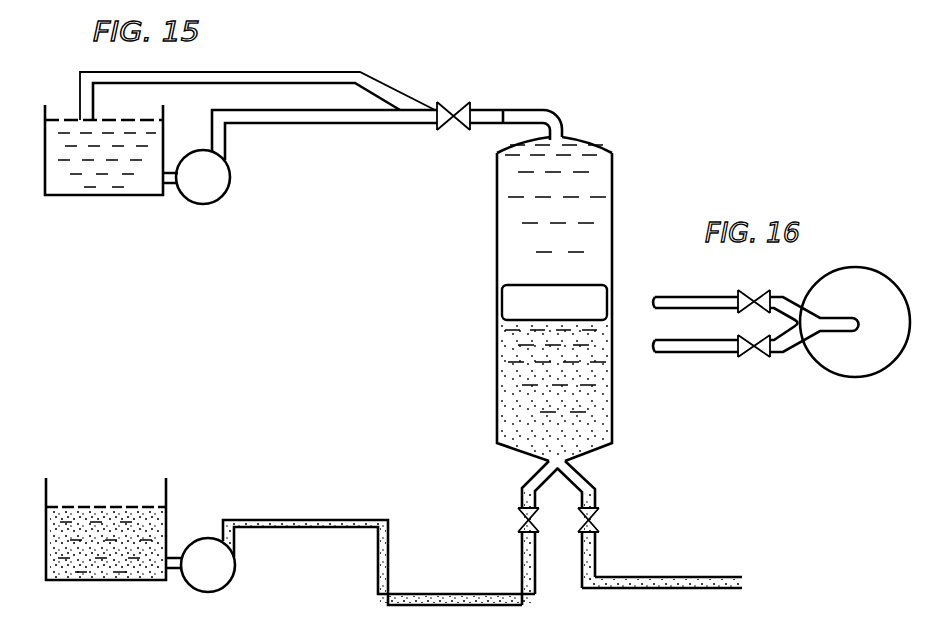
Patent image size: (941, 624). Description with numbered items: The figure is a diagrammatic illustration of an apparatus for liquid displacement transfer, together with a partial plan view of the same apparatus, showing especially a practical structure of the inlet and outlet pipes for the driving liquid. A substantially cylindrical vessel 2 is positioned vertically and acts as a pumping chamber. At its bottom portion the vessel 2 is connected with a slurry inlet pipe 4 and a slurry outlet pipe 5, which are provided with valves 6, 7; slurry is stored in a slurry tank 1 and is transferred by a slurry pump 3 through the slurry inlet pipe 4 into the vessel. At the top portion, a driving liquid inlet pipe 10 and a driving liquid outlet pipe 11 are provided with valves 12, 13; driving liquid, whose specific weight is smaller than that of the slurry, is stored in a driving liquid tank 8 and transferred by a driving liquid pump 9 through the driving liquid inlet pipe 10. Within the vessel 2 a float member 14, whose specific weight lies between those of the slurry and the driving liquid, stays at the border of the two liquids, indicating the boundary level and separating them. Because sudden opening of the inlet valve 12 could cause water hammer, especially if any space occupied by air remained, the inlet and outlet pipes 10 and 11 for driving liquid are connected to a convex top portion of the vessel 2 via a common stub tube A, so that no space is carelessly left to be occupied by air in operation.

In FIG. 15, the slurry tank 1 is at (162, 524).
In FIG. 15, the vessel 2 is at (497, 398).
In FIG. 16, the vessel 2 is at (905, 354).
In FIG. 15, the slurry pump 3 is at (229, 582).
In FIG. 15, the slurry inlet pipe 4 is at (413, 594).
In FIG. 15, the slurry outlet pipe 5 is at (662, 577).
In FIG. 15, the valve 6 is at (520, 520).
In FIG. 15, the valve 7 is at (593, 523).
In FIG. 15, the driving liquid tank 8 is at (139, 193).
In FIG. 15, the driving liquid pump 9 is at (225, 197).
In FIG. 15, the driving liquid inlet pipe 10 is at (325, 124).
In FIG. 16, the driving liquid inlet pipe 10 is at (675, 354).
In FIG. 15, the driving liquid outlet pipe 11 is at (308, 71).
In FIG. 16, the driving liquid outlet pipe 11 is at (678, 296).
In FIG. 15, the inlet valve 12 is at (453, 108).
In FIG. 16, the inlet valve 12 is at (752, 352).
In FIG. 16, the valve 13 is at (753, 297).
In FIG. 15, the float member 14 is at (502, 300).
In FIG. 15, the common stub tube A is at (550, 110).
In FIG. 16, the common stub tube A is at (833, 318).